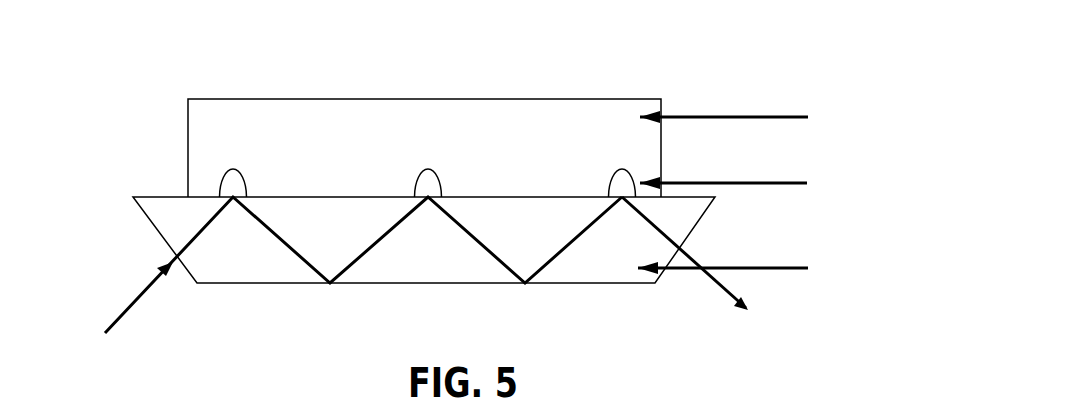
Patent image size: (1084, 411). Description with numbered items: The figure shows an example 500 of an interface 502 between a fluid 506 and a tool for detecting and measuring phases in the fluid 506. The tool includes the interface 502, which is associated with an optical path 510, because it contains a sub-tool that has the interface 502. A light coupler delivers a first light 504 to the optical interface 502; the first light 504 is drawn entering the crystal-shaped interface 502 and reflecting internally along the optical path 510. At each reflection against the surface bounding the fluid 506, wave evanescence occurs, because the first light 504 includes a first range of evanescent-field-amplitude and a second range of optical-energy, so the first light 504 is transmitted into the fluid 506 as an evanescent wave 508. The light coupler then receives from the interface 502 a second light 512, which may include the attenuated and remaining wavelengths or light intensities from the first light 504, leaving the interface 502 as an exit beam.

The example 500 is at (847, 85).
The interface 502 is at (135, 196).
The first light 504 is at (142, 302).
The fluid 506 is at (830, 103).
The evanescent wave 508 is at (807, 162).
The optical path 510 is at (833, 240).
The second light 512 is at (712, 282).